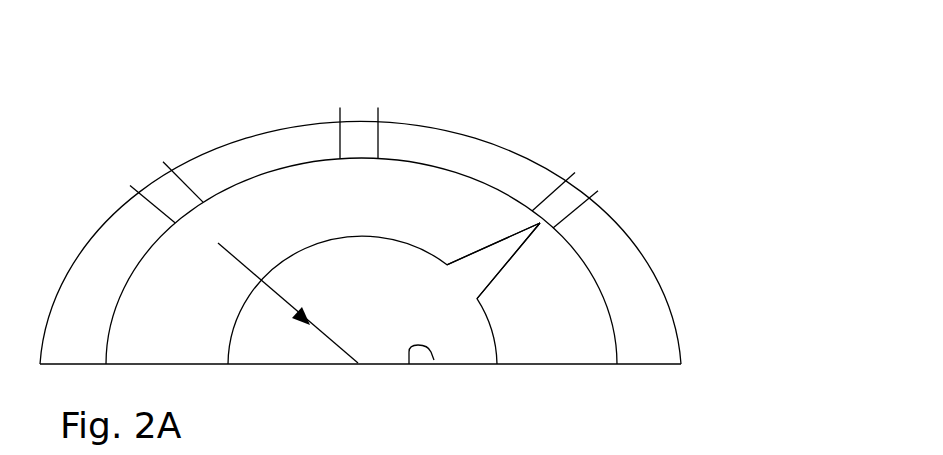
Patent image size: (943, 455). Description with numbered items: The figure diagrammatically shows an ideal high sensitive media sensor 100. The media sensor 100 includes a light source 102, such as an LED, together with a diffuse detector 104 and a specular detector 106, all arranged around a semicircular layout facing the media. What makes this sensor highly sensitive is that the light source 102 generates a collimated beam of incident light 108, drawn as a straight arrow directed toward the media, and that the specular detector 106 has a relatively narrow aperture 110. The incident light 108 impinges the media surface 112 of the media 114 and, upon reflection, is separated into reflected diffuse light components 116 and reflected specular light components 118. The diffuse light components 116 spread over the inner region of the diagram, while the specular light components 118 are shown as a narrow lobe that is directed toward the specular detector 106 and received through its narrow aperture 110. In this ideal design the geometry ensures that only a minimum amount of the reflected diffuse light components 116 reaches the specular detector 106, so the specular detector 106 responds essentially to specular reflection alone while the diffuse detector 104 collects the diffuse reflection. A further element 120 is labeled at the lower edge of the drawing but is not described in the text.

The high sensitive media sensor 100 is at (650, 46).
The light source 102 is at (137, 180).
The diffuse detector 104 is at (370, 106).
The specular detector 106 is at (588, 182).
The incident light 108 is at (247, 267).
The narrow aperture 110 is at (532, 211).
The media surface 112 is at (434, 360).
The media 114 is at (660, 366).
The reflected diffuse light components 116 is at (352, 235).
The reflected specular light components 118 is at (468, 253).
The substrate 120 is at (732, 454).